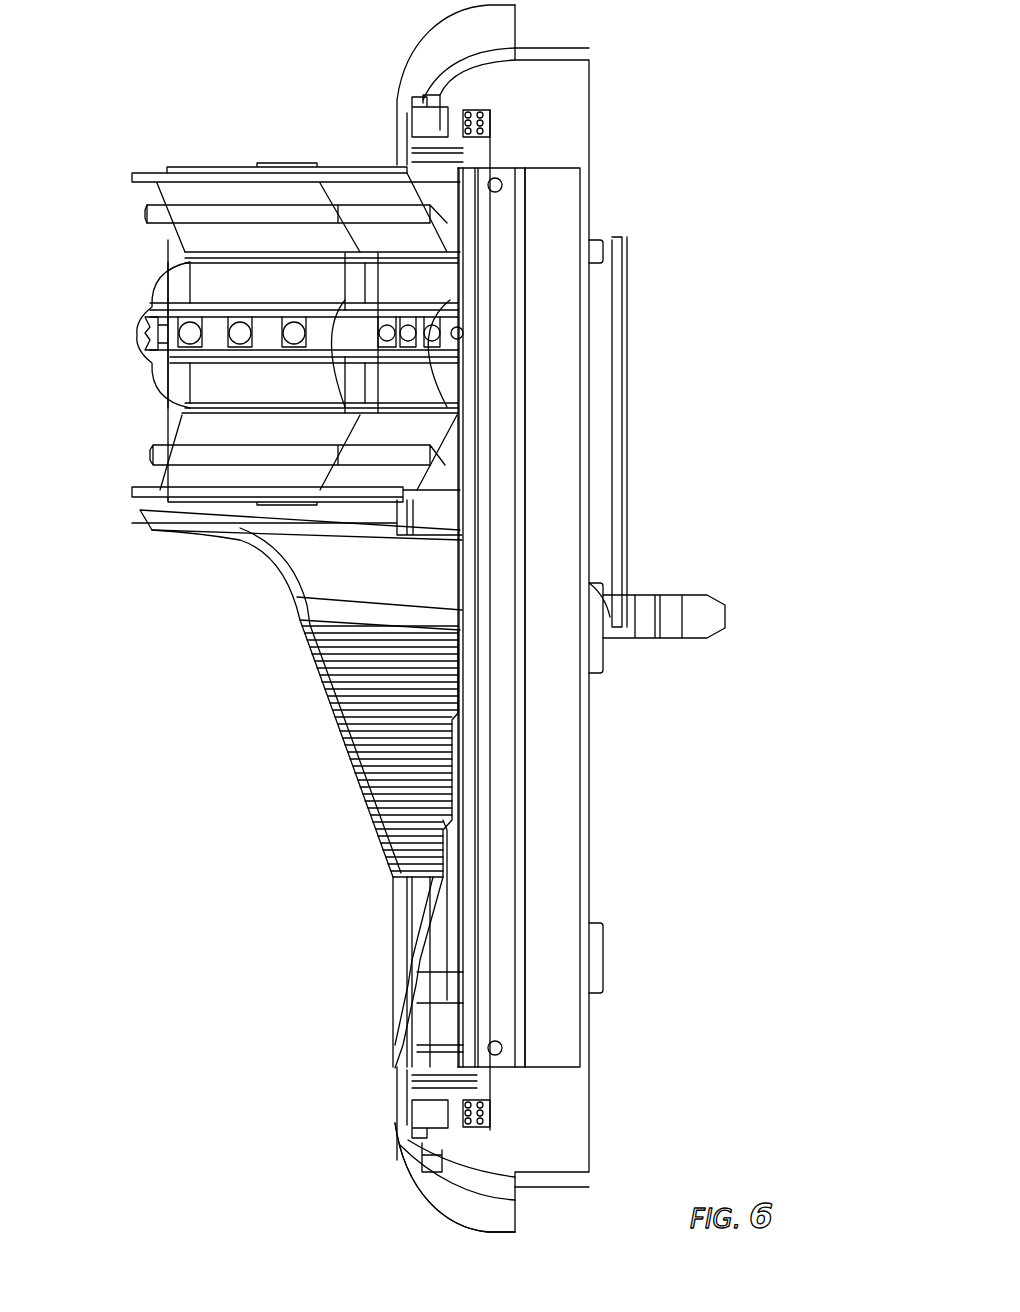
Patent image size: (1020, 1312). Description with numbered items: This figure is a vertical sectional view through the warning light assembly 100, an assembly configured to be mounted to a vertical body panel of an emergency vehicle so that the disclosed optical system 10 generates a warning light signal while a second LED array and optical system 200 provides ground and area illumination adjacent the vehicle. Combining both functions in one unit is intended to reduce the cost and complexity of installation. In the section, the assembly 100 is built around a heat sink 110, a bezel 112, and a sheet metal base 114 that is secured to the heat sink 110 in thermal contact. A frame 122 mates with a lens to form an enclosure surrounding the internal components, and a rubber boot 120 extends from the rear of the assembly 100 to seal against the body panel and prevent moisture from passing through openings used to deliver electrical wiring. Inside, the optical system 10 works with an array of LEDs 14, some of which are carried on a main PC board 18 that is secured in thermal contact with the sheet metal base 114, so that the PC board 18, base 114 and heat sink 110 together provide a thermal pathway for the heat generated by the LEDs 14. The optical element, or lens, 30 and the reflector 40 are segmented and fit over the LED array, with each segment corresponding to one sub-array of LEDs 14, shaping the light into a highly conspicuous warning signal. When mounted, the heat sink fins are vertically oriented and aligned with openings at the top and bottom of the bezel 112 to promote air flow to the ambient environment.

The optical system 10 is at (95, 327).
The LEDs 14 is at (462, 333).
The main PC board 18 is at (466, 175).
The optical element (lens) 30 is at (132, 287).
The reflector 40 is at (150, 190).
The warning light assembly 100 is at (632, 181).
The heat sink 110 is at (557, 862).
The bezel 112 is at (405, 1183).
The sheet metal base 114 is at (487, 1093).
The rubber boot 120 is at (603, 430).
The frame 122 is at (420, 98).
The second LED array and optical system 200 is at (265, 703).